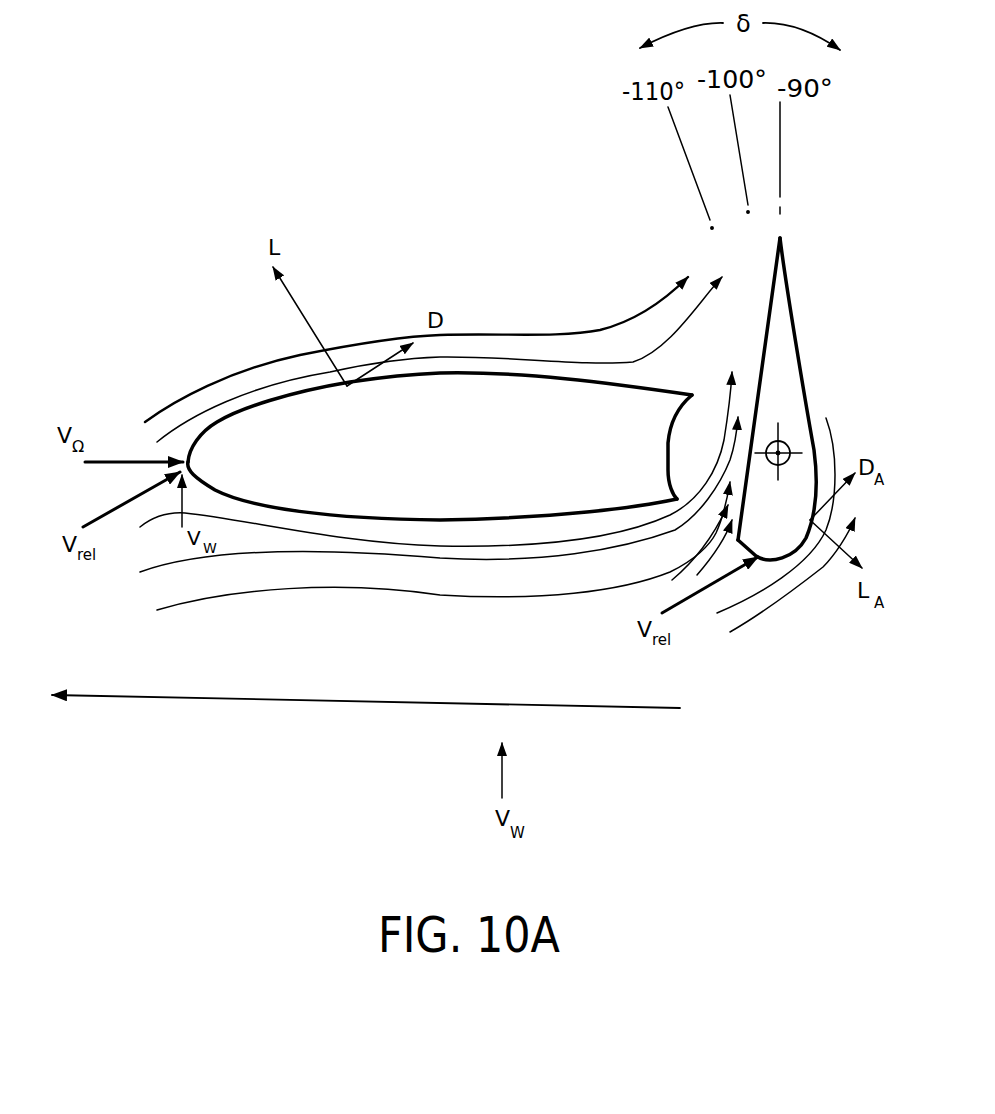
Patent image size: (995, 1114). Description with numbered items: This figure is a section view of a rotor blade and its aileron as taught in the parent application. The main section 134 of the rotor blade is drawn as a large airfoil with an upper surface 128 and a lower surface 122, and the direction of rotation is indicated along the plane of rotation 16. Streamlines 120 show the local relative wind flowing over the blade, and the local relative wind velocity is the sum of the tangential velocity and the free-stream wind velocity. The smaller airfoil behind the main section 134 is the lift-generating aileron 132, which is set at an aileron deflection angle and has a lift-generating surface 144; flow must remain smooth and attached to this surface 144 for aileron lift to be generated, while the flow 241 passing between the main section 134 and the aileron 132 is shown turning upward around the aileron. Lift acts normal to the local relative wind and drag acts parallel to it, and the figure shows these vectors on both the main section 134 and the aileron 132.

The plane of rotation 16 is at (440, 705).
The air flow streamlines 120 is at (567, 313).
The lower surface of airfoil 122 is at (562, 522).
The upper surface of airfoil 128 is at (602, 379).
The secondary airfoil 132 is at (805, 399).
The main section of the rotor blade 134 is at (440, 447).
The lift-generating surface 144 is at (805, 397).
The air flow between airfoils 241 is at (708, 418).